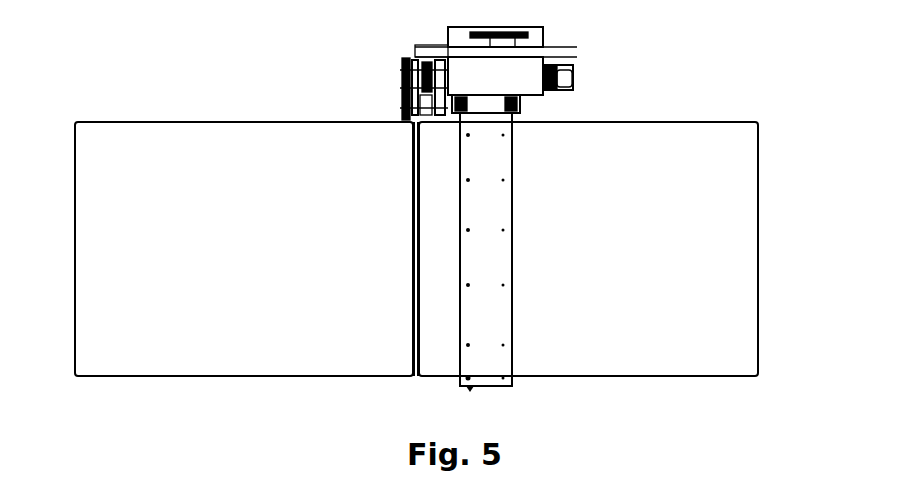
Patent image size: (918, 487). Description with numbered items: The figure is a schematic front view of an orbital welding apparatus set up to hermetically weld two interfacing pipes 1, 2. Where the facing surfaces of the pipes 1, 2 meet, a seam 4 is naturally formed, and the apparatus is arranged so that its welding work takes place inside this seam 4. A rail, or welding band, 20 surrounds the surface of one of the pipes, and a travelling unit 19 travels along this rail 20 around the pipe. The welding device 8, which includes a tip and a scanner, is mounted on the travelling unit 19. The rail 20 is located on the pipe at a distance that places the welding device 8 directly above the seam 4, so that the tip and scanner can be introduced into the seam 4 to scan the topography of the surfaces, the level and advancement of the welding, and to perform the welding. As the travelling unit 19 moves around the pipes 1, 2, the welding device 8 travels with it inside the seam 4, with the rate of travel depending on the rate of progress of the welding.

The pipe 1 is at (167, 157).
The pipe 2 is at (707, 170).
The seam 4 is at (412, 302).
The welding device 8 is at (400, 90).
The travelling unit 19 is at (547, 40).
The rail (welding band) 20 is at (516, 250).